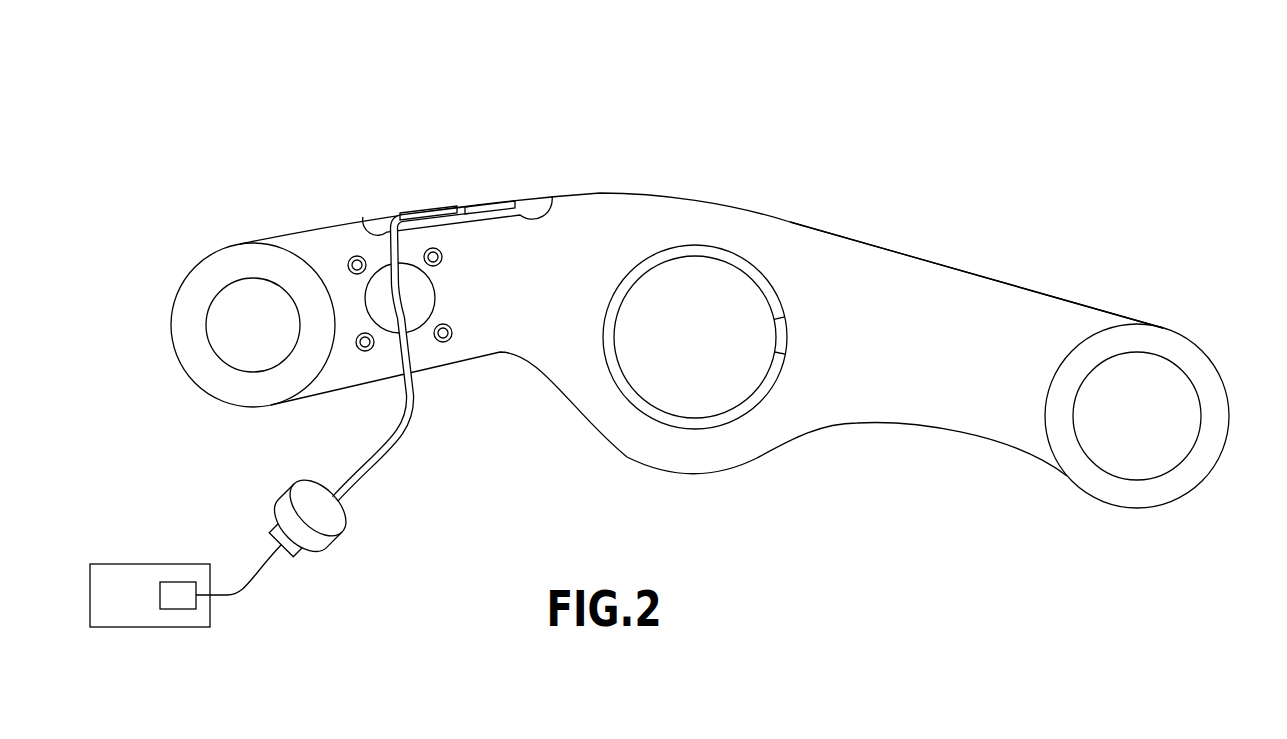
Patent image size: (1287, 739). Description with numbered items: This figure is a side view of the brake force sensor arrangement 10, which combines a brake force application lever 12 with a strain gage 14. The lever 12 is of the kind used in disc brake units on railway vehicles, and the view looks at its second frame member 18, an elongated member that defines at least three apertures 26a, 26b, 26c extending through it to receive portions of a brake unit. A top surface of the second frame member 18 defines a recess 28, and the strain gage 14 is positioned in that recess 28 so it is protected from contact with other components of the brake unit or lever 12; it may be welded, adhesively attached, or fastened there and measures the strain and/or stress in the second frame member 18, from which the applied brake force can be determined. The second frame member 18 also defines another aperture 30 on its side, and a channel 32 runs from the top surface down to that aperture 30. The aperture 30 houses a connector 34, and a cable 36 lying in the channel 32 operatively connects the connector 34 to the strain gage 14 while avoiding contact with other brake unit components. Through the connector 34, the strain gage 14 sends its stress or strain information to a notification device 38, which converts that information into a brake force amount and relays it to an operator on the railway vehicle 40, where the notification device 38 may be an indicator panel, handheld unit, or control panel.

The brake force sensor arrangement 10 is at (705, 305).
The lever 12 is at (705, 364).
The strain gage 14 is at (498, 200).
The second frame member 18 is at (1022, 317).
The aperture 26a is at (240, 297).
The aperture 26b is at (715, 387).
The aperture 26c is at (1167, 448).
The recess 28 is at (425, 227).
The aperture 30 is at (418, 302).
The channel 32 is at (387, 248).
The connector 34 is at (300, 497).
The cable 36 is at (409, 414).
The notification device 38 is at (178, 582).
The railway vehicle 40 is at (185, 592).